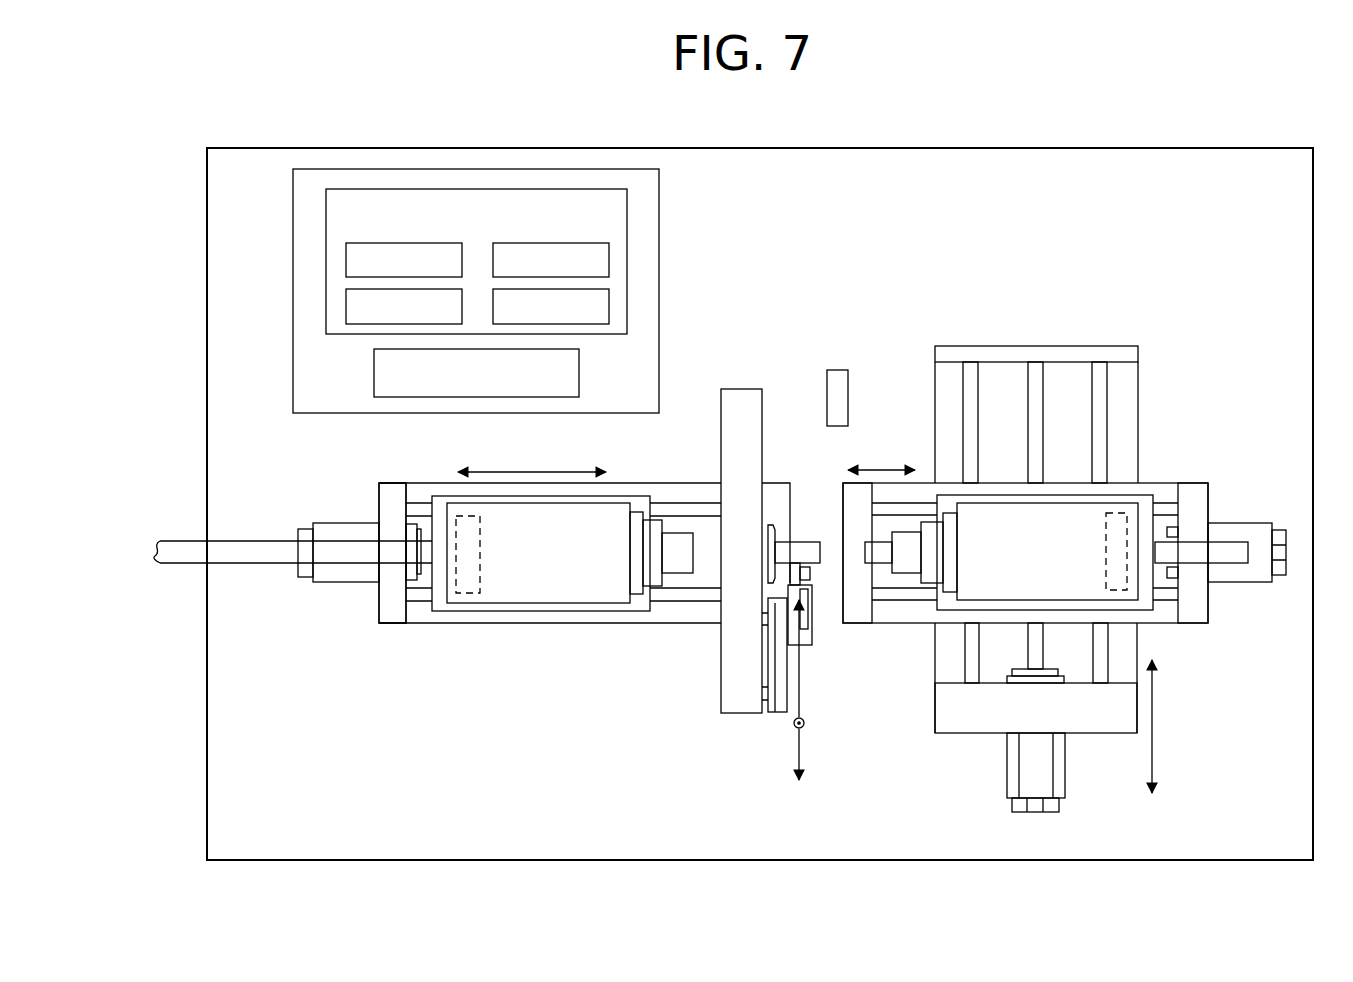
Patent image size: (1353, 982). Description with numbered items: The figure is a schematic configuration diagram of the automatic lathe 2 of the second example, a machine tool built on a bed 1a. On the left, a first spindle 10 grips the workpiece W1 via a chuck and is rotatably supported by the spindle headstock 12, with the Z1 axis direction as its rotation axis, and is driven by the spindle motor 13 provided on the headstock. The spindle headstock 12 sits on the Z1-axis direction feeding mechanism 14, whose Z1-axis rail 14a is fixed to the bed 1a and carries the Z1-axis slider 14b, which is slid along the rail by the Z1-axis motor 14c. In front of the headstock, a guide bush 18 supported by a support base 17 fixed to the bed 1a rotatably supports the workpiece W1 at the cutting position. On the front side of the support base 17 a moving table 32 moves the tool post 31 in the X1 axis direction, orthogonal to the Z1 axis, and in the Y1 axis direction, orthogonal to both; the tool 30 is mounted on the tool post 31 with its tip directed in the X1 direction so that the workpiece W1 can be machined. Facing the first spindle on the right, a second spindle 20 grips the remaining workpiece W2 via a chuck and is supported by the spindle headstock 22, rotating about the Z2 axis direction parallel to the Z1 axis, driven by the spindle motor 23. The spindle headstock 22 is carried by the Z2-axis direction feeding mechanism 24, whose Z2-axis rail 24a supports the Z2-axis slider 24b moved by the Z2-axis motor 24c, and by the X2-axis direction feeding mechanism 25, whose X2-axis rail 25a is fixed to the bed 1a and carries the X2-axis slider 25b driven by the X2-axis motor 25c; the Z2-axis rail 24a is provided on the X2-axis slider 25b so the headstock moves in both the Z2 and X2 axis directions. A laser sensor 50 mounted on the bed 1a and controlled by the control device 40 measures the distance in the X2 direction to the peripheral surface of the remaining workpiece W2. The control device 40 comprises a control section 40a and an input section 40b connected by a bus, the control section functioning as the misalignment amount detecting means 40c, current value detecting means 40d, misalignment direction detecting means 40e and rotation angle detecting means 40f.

The automatic lathe 2 is at (940, 146).
The bed 1a is at (670, 826).
The control device 40 is at (293, 182).
The control section 40a is at (627, 204).
The input section 40b is at (579, 373).
The misalignment amount detecting means 40c is at (346, 256).
The current value detecting means 40d is at (346, 306).
The misalignment direction detecting means 40e is at (609, 258).
The rotation angle detecting means 40f is at (609, 306).
The laser sensor 50 is at (841, 372).
The support base 17 is at (742, 402).
The guide bush 18 is at (768, 532).
The first spindle 10 is at (655, 565).
The spindle headstock 12 is at (560, 580).
The spindle motor 13 is at (465, 592).
The Z1-axis direction feeding mechanism 14 is at (337, 609).
The Z1-axis rail 14a is at (398, 584).
The Z1-axis slider 14b is at (437, 589).
The Z1-axis motor 14c is at (325, 577).
The workpiece W1 is at (245, 556).
The remaining workpiece W2 is at (1243, 530).
The second spindle 20 is at (932, 566).
The spindle headstock 22 is at (1035, 530).
The spindle motor 23 is at (1120, 574).
The Z2-axis direction feeding mechanism 24 is at (1090, 387).
The Z2-axis rail 24a is at (1068, 487).
The Z2-axis slider 24b is at (1147, 540).
The Z2-axis motor 24c is at (1232, 530).
The X2-axis direction feeding mechanism 25 is at (1074, 787).
The X2-axis rail 25a is at (1080, 674).
The X2-axis slider 25b is at (1193, 624).
The X2-axis motor 25c is at (1038, 816).
The tool 30 is at (809, 577).
The tool post 31 is at (795, 630).
The moving table 32 is at (764, 672).
The Z1 axis direction Z1 is at (532, 458).
The Z2 axis direction Z2 is at (881, 460).
The X1 axis direction X1 is at (817, 690).
The Y1 axis direction Y1 is at (795, 724).
The X2 axis direction X2 is at (1168, 726).